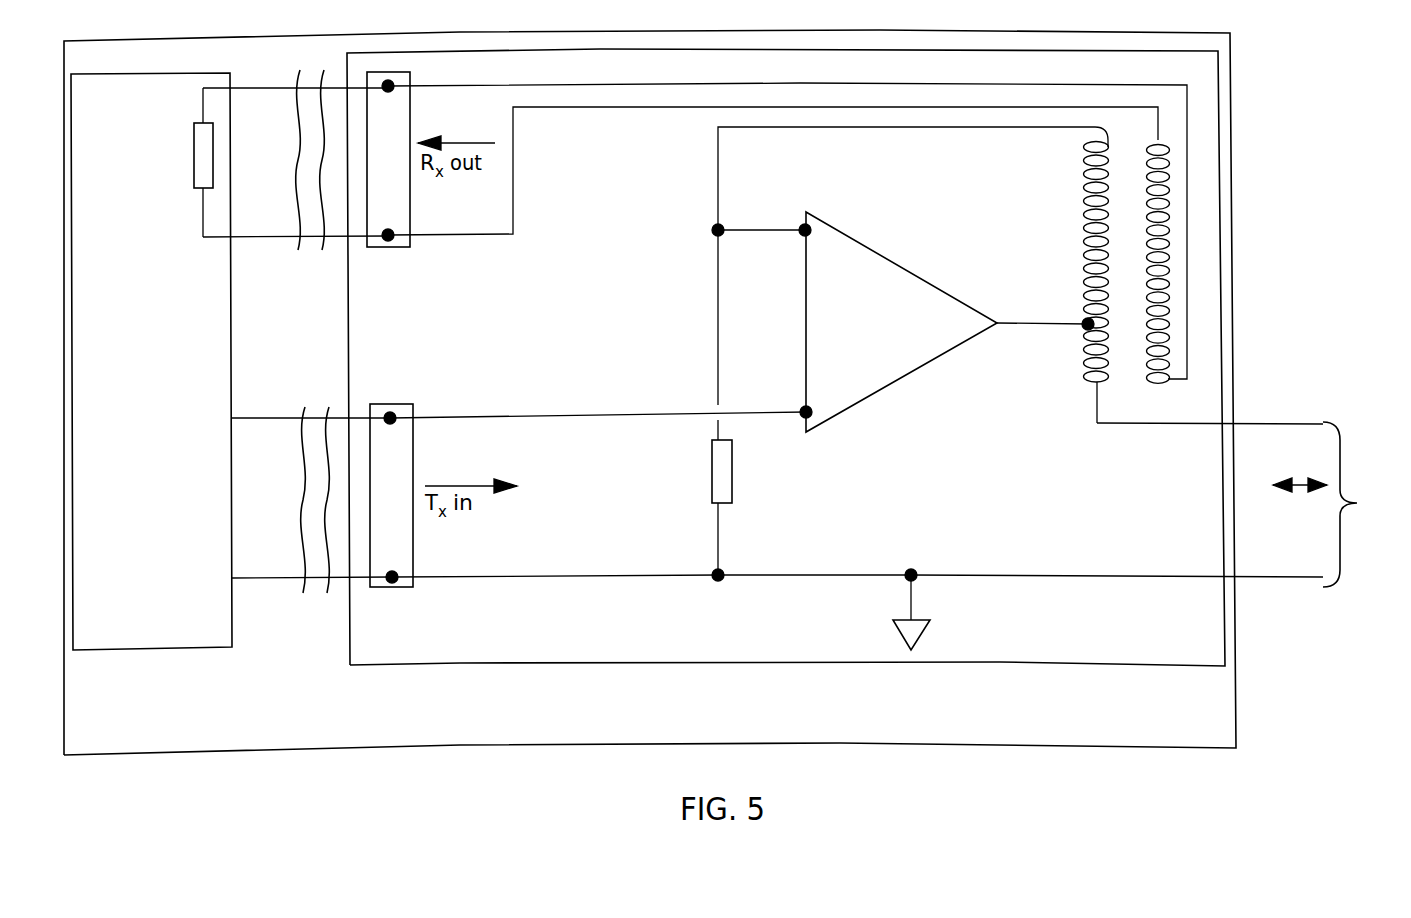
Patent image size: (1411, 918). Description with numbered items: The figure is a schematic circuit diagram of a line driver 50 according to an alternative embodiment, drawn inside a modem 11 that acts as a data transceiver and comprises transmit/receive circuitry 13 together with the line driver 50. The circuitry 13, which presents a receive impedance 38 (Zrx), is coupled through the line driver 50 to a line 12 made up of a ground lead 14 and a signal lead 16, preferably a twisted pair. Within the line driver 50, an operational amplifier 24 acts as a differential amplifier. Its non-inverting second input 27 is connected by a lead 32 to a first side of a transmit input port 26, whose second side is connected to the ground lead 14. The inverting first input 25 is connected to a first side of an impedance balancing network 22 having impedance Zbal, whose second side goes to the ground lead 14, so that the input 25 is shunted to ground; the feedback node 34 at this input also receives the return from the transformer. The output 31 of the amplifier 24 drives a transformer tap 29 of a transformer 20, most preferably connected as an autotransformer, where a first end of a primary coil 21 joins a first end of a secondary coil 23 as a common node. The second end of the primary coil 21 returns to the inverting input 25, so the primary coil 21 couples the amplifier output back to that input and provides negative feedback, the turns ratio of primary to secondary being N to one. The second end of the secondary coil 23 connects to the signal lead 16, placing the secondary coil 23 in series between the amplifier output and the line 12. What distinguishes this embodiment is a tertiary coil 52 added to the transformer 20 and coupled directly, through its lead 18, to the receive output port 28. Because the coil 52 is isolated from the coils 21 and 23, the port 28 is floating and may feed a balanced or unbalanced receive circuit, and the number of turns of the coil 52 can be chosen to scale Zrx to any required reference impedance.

The modem 11 is at (838, 745).
The line driver 50 is at (845, 664).
The transmit/receive circuitry 13 is at (150, 73).
The receive impedance 38 is at (193, 165).
The receive output port 28 is at (388, 249).
The transmit input port 26 is at (388, 590).
The lead 18 is at (483, 83).
The feedback node 34 is at (717, 225).
The inverting first input 25 is at (800, 232).
The non-inverting second input 27 is at (803, 415).
The lead 32 is at (553, 413).
The operational amplifier 24 is at (883, 388).
The output 31 is at (996, 326).
The impedance balancing network 22 is at (733, 480).
The transformer 20 is at (1112, 283).
The primary coil 21 is at (1083, 175).
The transformer tap 29 is at (1085, 320).
The secondary coil 23 is at (1088, 350).
The tertiary coil 52 is at (1160, 385).
The signal lead 16 is at (1260, 423).
The ground lead 14 is at (1155, 578).
The line 12 is at (1332, 504).